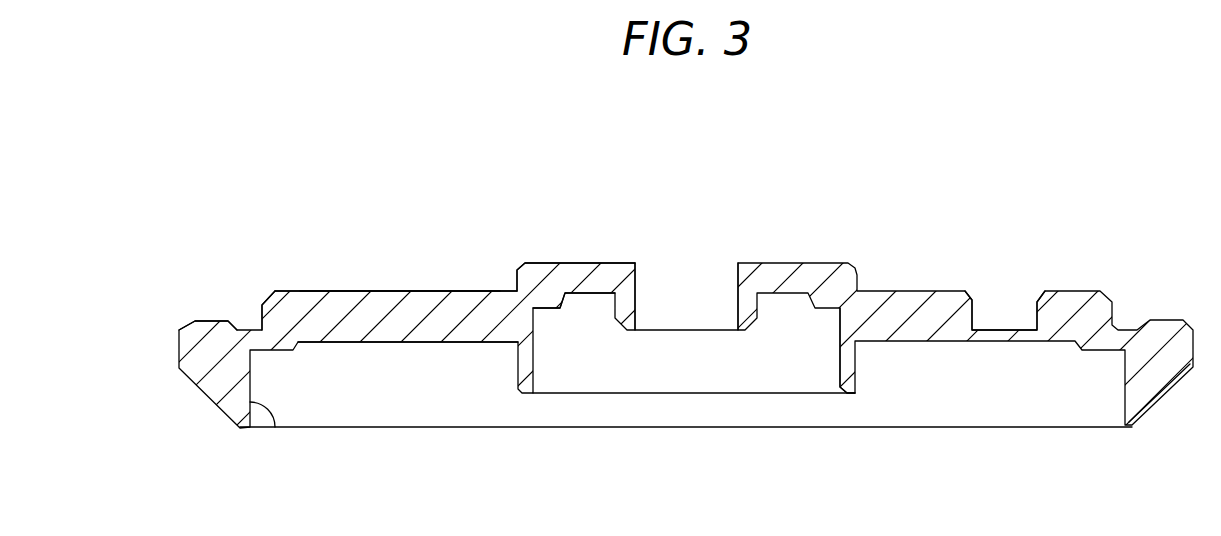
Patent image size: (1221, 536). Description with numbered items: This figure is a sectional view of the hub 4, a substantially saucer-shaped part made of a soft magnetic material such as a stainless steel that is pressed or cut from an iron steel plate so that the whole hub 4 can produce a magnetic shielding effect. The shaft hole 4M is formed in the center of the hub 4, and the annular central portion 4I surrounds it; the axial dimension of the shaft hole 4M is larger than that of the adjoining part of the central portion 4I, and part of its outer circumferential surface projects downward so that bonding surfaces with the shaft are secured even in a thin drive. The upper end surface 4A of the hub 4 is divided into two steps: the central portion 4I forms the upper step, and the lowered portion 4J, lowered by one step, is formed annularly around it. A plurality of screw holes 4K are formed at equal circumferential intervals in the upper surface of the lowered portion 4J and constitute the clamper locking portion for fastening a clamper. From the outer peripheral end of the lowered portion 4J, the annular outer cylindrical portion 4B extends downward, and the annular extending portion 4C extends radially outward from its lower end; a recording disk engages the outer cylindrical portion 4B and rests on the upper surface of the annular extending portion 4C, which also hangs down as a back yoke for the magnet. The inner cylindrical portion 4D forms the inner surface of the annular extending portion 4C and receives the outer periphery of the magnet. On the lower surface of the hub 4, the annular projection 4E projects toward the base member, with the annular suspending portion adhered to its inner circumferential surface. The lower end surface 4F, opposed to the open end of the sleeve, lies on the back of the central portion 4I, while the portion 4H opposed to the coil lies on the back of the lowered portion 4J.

The hub 4 is at (773, 97).
The upper end surface 4A is at (430, 265).
The outer cylindrical portion 4B is at (262, 305).
The annular extending portion 4C is at (202, 320).
The inner cylindrical portion 4D is at (273, 428).
The annular projection 4E is at (840, 372).
The lower end surface 4F is at (595, 297).
The portion opposed to the coil 4H is at (417, 342).
The central portion 4I is at (582, 273).
The lowered portion 4J is at (312, 291).
The screw holes 4K is at (1000, 317).
The shaft hole 4M is at (637, 290).